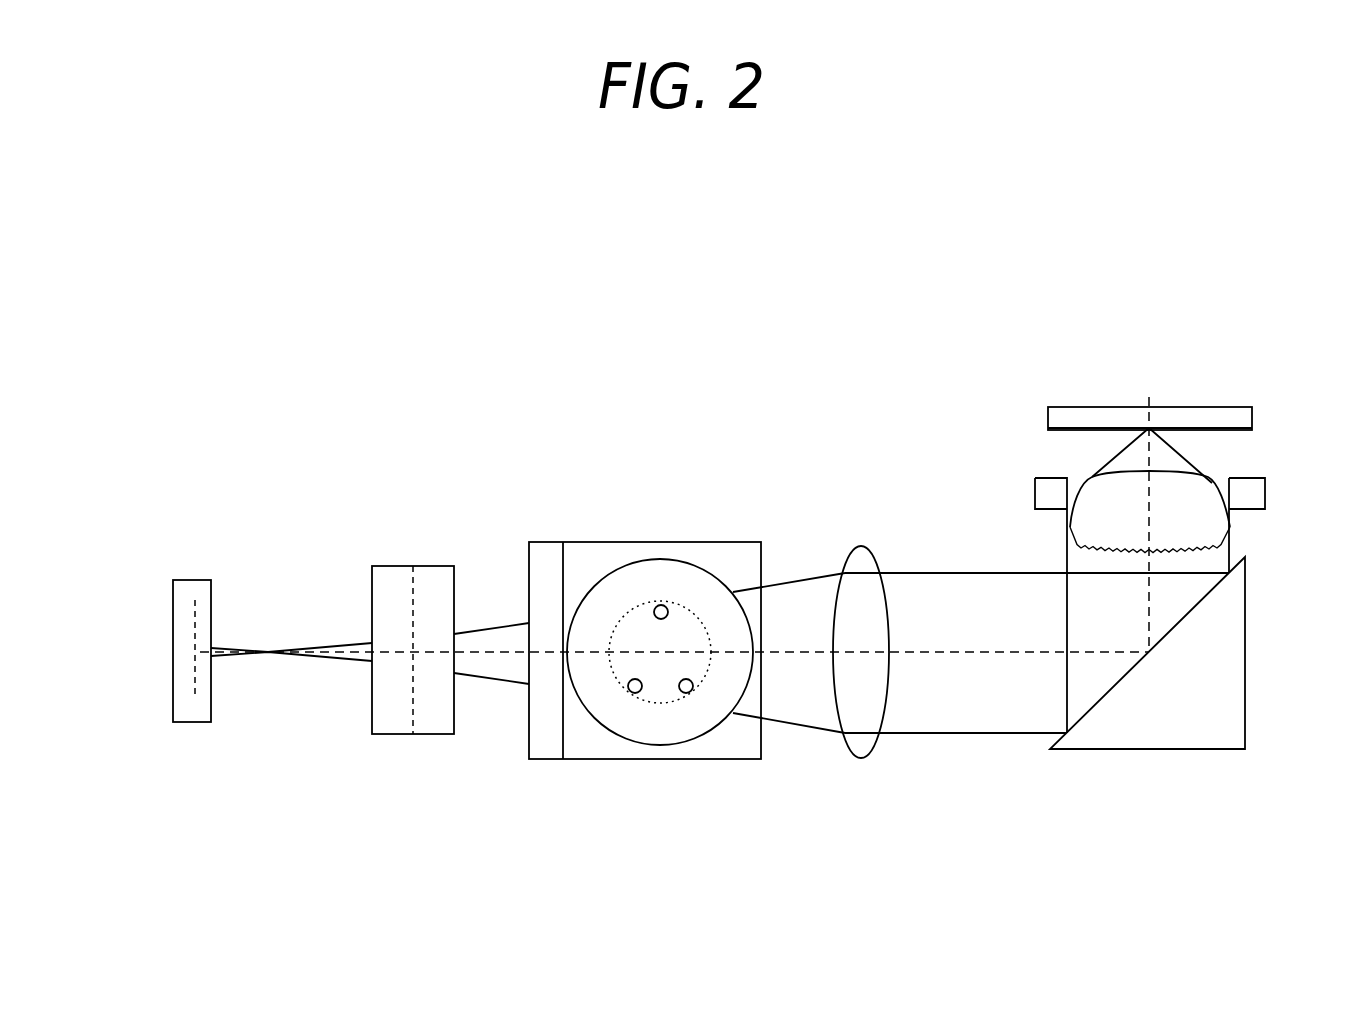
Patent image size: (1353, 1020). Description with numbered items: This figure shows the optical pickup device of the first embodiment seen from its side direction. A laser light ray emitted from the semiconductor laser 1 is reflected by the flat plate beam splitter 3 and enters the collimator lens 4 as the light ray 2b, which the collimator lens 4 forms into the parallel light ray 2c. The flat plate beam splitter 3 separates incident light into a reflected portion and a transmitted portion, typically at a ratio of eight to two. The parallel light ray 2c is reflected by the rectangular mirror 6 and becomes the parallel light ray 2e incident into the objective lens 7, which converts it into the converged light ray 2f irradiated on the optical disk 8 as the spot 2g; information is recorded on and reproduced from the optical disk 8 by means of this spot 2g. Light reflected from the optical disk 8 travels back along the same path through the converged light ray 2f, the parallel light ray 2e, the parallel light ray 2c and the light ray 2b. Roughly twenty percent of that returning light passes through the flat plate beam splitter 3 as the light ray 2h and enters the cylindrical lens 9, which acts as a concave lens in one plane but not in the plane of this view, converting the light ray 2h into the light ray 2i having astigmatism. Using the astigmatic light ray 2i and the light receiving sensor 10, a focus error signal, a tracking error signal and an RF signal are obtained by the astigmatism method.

The semiconductor laser 1 is at (662, 575).
The flat plate beam splitter 3 is at (575, 748).
The collimator lens 4 is at (855, 560).
The rectangular mirror 6 is at (1233, 739).
The objective lens 7 is at (1262, 498).
The optical disk 8 is at (1190, 407).
The cylindrical lens 9 is at (393, 578).
The light receiving sensor 10 is at (190, 681).
The light ray 2b is at (788, 700).
The parallel light ray 2c is at (961, 705).
The parallel light ray 2e is at (1078, 562).
The converged light ray 2f is at (1197, 467).
The spot 2g is at (1149, 428).
The light ray 2h is at (510, 640).
The light ray having astigmatism 2i is at (325, 648).